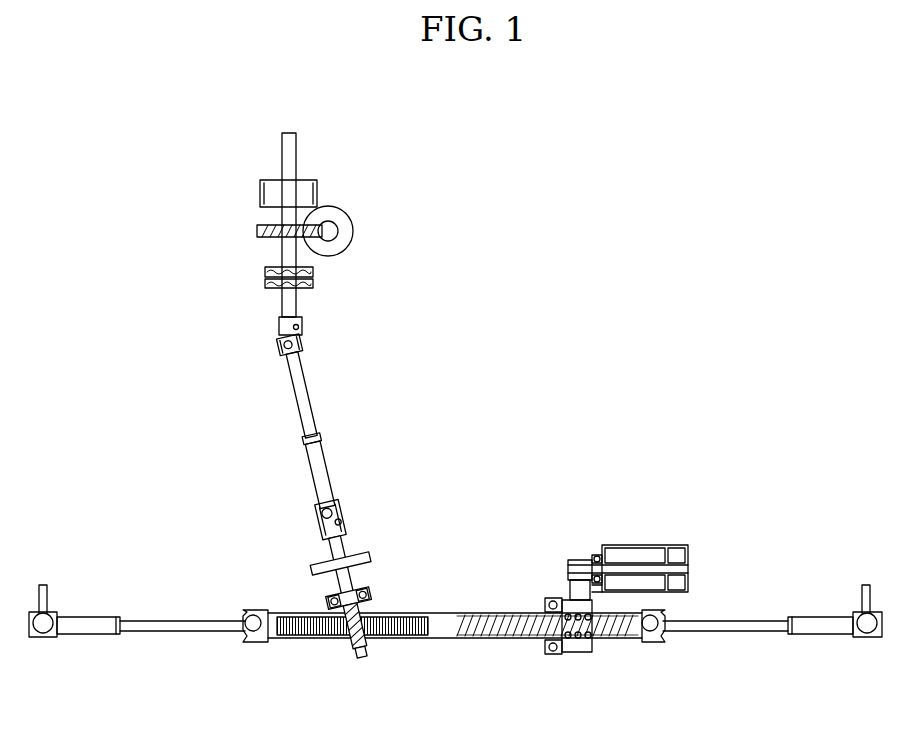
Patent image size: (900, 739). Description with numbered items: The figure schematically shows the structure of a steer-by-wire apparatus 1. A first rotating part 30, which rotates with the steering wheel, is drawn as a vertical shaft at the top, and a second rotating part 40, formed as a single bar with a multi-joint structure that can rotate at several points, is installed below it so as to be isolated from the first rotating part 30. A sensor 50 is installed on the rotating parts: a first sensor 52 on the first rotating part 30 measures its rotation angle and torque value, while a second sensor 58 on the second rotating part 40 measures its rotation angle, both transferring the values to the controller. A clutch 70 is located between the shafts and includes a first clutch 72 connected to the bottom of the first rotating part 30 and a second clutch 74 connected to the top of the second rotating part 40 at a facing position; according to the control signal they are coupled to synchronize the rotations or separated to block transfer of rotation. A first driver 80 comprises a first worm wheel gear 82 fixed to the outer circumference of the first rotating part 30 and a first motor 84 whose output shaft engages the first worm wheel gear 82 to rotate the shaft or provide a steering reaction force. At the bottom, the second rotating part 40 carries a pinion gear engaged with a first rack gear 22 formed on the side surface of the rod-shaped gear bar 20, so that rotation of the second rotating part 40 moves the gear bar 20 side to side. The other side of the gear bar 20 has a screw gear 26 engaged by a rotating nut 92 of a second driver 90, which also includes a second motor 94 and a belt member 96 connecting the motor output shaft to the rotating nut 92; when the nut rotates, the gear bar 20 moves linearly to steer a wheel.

The steer-by-wire apparatus 1 is at (508, 232).
The gear bar 20 is at (461, 654).
The first rack gear 22 is at (397, 639).
The screw gear 26 is at (519, 639).
The first rotating part 30 is at (316, 144).
The second rotating part 40 is at (334, 386).
The sensor 50 is at (238, 171).
The first sensor 52 is at (254, 200).
The second sensor 58 is at (381, 548).
The clutch 70 is at (332, 286).
The first clutch 72 is at (316, 271).
The second clutch 74 is at (316, 286).
The first driver 80 is at (341, 204).
The first worm wheel gear 82 is at (304, 226).
The first motor 84 is at (352, 218).
The second driver 90 is at (628, 554).
The rotating nut 92 is at (568, 600).
The second motor 94 is at (653, 545).
The belt member 96 is at (592, 594).